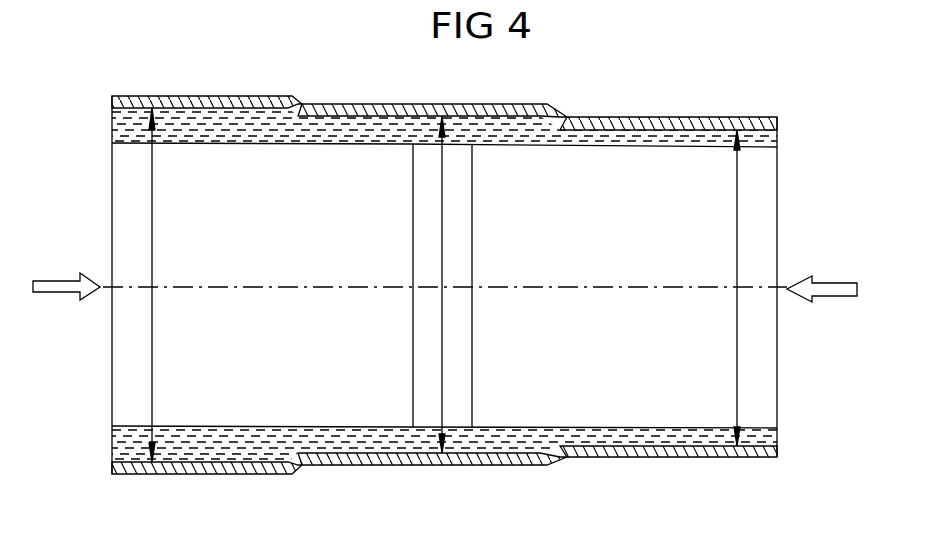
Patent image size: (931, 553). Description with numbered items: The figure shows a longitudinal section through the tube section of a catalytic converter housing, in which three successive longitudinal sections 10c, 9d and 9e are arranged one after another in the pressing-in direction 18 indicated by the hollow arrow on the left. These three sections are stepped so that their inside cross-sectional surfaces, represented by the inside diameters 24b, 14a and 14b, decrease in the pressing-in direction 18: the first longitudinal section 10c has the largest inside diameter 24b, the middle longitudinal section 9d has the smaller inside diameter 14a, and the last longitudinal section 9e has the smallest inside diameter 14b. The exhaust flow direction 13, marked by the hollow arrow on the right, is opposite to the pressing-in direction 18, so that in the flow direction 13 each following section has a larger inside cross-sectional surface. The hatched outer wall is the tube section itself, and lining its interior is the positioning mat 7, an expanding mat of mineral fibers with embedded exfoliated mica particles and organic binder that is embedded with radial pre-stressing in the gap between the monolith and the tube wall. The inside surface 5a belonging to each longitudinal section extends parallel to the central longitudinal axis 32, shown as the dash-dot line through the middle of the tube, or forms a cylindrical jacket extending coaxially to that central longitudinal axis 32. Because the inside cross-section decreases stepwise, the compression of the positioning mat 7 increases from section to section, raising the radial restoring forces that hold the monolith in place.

The longitudinal section 10c is at (203, 97).
The positioning mat 7 is at (262, 120).
The longitudinal section 9d is at (378, 103).
The longitudinal section 9e is at (657, 121).
The inside surface 5a is at (185, 462).
The inside diameter 24b is at (153, 272).
The inside diameter 14a is at (442, 267).
The inside diameter 14b is at (737, 272).
The central longitudinal axis 32 is at (283, 283).
The pressing-in direction 18 is at (54, 281).
The flow direction 13 is at (832, 283).